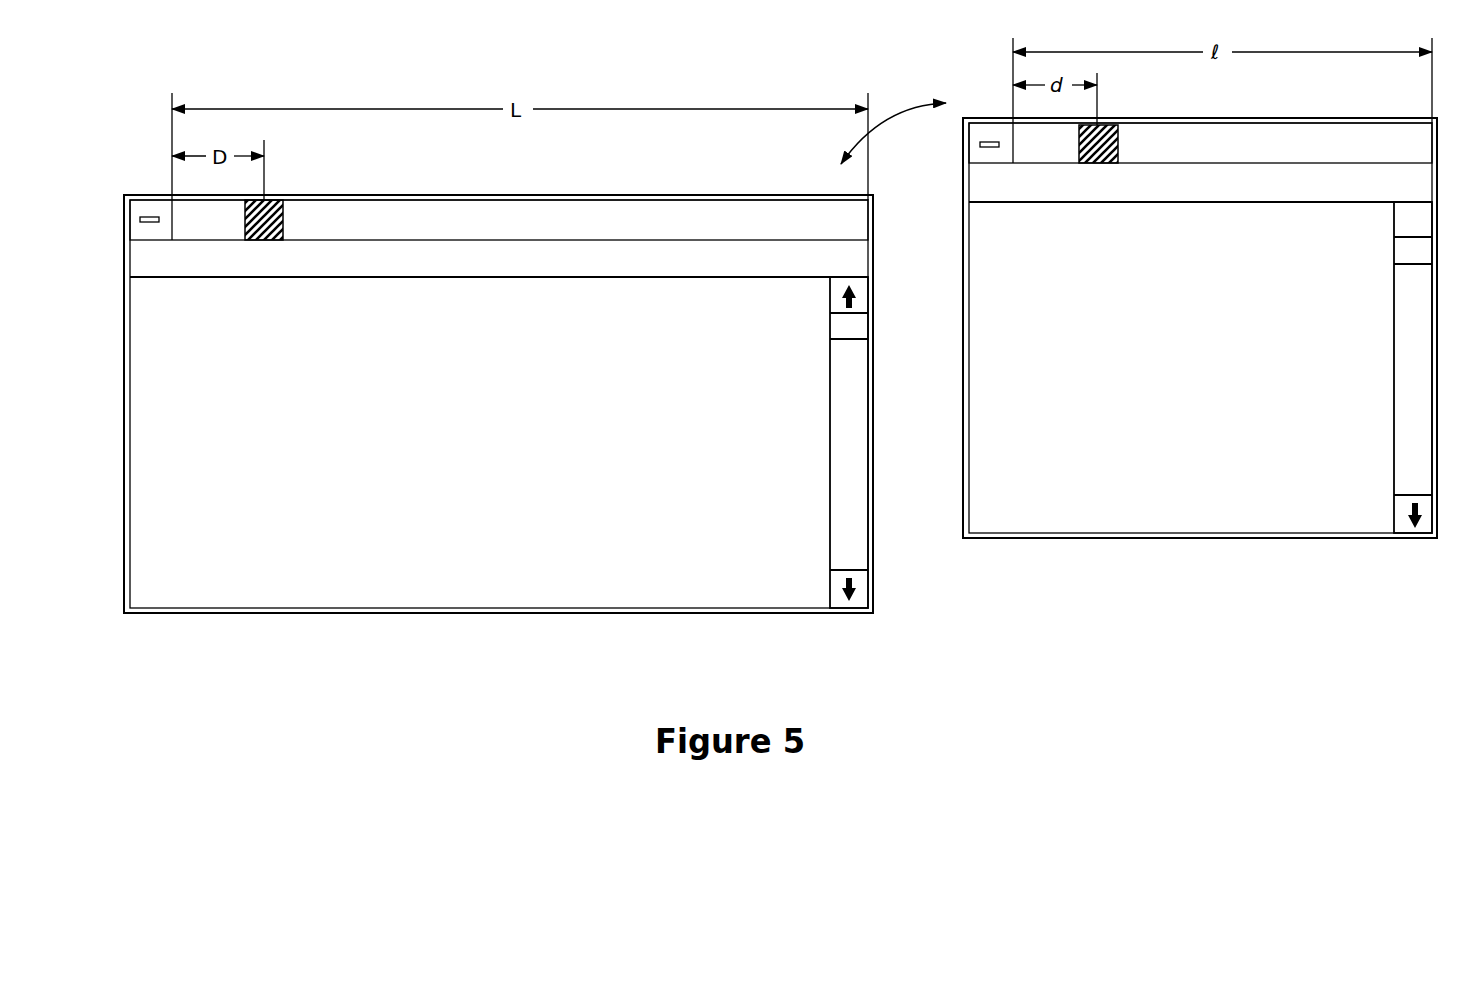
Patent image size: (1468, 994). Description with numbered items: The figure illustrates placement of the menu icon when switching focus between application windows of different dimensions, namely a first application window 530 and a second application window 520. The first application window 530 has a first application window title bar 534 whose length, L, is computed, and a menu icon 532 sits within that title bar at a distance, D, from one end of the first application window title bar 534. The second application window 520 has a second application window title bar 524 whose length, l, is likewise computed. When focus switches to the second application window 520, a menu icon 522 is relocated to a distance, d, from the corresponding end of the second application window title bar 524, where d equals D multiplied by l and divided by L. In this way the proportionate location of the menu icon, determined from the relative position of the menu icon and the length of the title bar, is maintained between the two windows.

The second application window 520 is at (1380, 522).
The menu icon 522 is at (1108, 124).
The second application window title bar 524 is at (1332, 136).
The first application window 530 is at (805, 599).
The menu icon 532 is at (276, 198).
The first application window title bar 534 is at (623, 212).